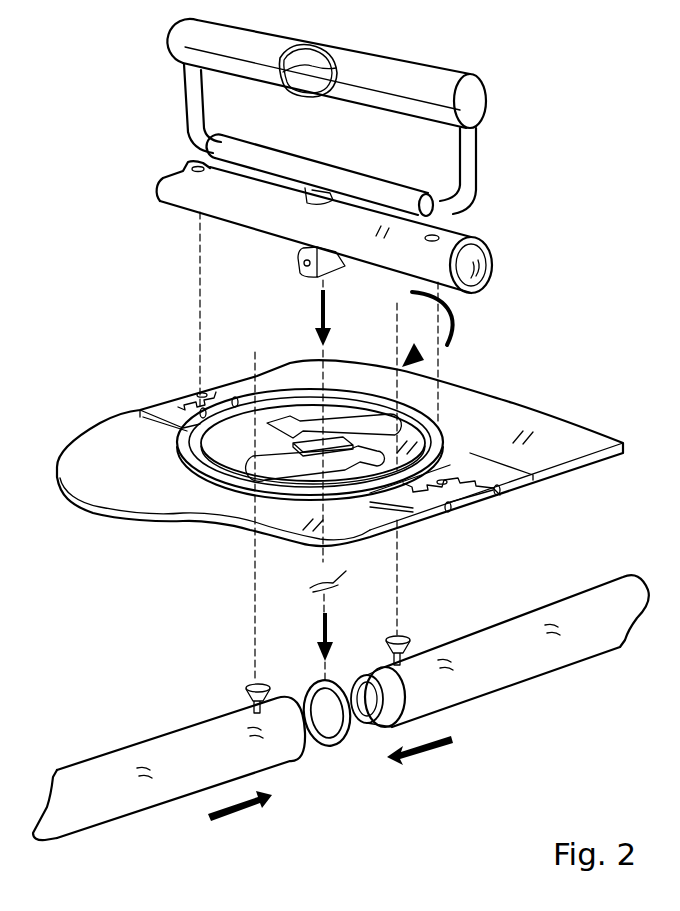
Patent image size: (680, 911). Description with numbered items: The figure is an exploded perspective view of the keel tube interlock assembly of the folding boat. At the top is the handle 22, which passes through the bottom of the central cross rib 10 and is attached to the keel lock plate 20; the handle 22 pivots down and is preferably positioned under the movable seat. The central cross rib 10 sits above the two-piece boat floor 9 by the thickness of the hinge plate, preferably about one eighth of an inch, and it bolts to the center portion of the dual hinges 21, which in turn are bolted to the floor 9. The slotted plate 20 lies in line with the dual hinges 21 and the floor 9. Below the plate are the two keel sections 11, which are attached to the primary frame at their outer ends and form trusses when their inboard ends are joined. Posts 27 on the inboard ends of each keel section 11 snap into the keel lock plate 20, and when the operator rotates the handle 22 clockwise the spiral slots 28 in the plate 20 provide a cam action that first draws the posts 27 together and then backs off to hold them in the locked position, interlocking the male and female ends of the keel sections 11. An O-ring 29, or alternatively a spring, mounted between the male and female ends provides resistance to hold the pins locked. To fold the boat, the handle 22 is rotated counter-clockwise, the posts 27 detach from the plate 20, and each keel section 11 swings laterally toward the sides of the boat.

The boat floor 9 is at (570, 450).
The central cross rib 10 is at (453, 240).
The keel section 11 is at (503, 667).
The keel lock plate 20 is at (430, 427).
The dual hinges 21 is at (457, 513).
The handle 22 is at (487, 87).
The post 27 is at (412, 628).
The spiral slot 28 is at (232, 485).
The O-ring 29 is at (340, 750).